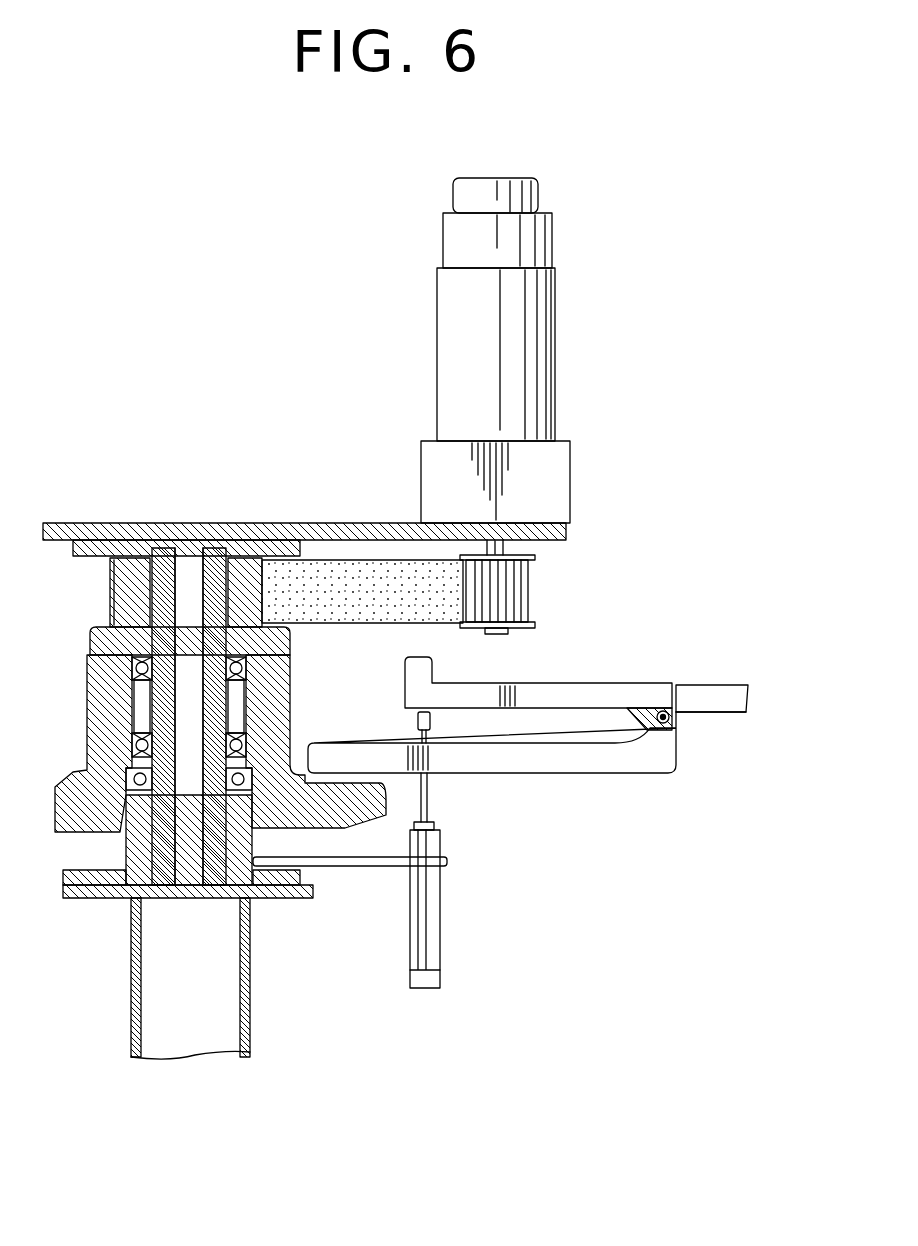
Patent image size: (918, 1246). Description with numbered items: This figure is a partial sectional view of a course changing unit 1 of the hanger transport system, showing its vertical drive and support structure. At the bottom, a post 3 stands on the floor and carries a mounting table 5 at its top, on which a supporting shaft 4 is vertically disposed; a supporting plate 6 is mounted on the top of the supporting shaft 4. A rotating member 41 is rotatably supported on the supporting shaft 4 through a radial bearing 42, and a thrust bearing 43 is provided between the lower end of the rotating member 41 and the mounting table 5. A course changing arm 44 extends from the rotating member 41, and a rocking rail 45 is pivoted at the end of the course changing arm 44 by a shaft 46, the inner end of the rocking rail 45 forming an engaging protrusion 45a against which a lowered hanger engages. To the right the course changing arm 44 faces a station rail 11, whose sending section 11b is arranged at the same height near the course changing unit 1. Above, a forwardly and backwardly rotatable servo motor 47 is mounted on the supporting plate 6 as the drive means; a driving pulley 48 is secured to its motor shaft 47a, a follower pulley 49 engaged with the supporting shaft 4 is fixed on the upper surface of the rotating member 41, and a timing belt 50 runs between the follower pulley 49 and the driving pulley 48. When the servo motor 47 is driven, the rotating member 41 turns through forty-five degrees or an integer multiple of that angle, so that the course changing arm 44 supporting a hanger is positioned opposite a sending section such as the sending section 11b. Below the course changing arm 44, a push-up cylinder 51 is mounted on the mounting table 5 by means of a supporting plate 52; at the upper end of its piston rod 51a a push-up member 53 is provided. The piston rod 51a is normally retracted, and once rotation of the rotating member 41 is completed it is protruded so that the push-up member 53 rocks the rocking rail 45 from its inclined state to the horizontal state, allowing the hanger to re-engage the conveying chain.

The course changing unit 1 is at (238, 522).
The post 3 is at (131, 982).
The supporting shaft 4 is at (160, 703).
The mounting table 5 is at (128, 850).
The supporting plate 6 is at (330, 522).
The station rail 11 is at (718, 686).
The sending section 11b is at (708, 710).
The rotating member 41 is at (275, 688).
The radial bearing 42 is at (132, 668).
The thrust bearing 43 is at (243, 760).
The course changing arm 44 is at (622, 775).
The rocking rail 45 is at (558, 692).
The engaging protrusion 45a is at (427, 668).
The shaft 46 is at (663, 710).
The servo motor 47 is at (450, 361).
The motor shaft 47a is at (505, 545).
The driving pulley 48 is at (518, 600).
The follower pulley 49 is at (113, 592).
The timing belt 50 is at (378, 612).
The push-up cylinder 51 is at (440, 935).
The piston rod 51a is at (430, 806).
The supporting plate 52 is at (372, 868).
The push-up member 53 is at (418, 720).